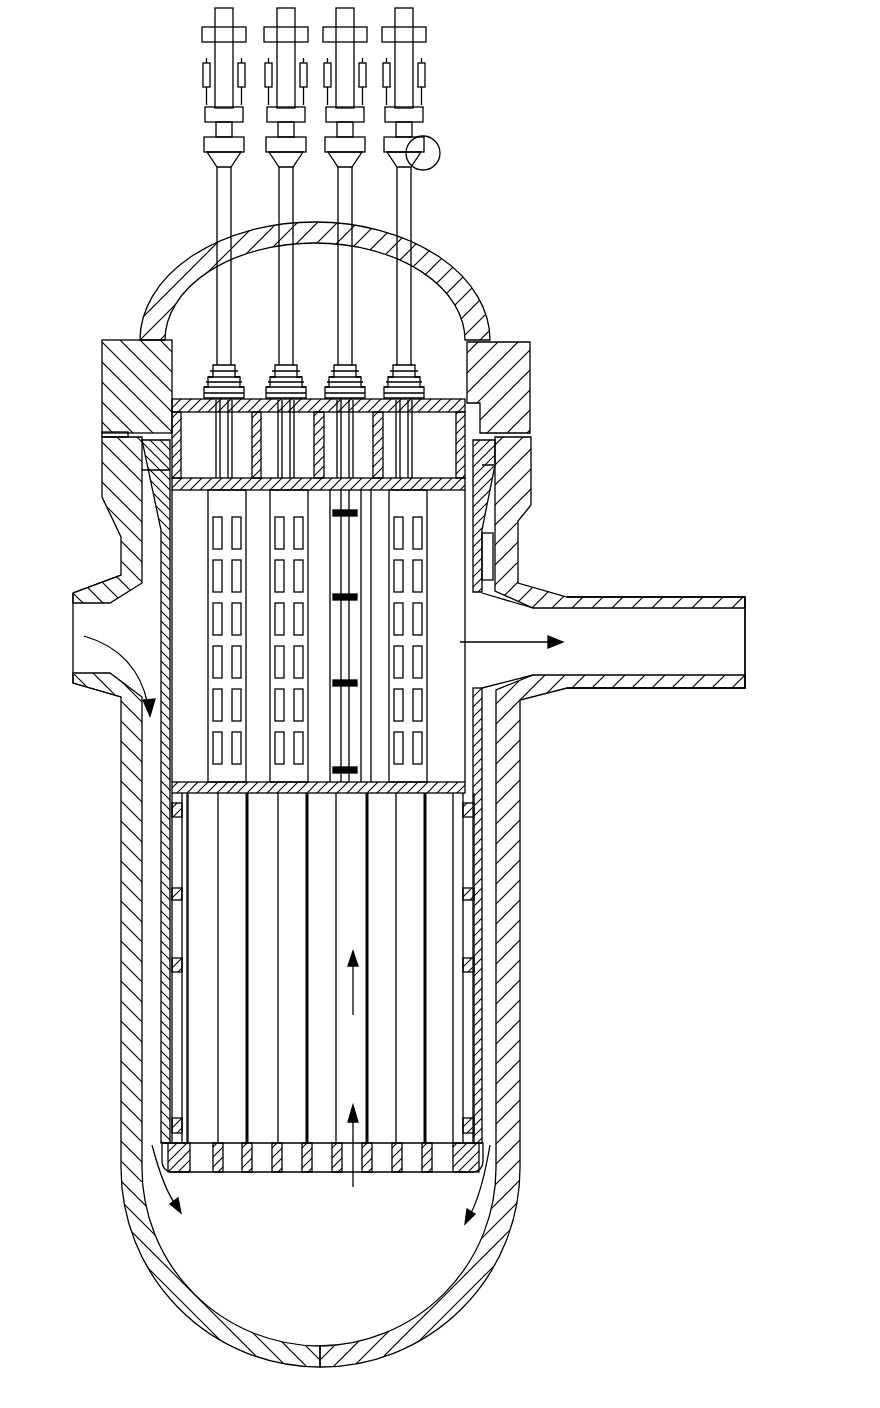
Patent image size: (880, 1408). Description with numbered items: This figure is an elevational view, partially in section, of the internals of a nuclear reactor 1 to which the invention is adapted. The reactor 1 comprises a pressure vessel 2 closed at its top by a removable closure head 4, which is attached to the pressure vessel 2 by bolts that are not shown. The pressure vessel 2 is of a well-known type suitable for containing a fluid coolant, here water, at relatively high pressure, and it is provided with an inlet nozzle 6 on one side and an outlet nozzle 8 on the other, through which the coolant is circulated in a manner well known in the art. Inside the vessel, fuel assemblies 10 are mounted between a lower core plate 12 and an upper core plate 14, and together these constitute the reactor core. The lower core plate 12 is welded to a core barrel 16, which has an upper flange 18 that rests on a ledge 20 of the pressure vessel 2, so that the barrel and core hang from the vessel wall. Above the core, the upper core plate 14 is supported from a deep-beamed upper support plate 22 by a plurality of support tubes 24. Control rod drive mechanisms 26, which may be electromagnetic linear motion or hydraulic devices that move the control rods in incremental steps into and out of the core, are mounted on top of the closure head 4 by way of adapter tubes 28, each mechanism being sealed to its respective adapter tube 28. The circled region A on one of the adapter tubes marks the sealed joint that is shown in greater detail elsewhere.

The reactor 1 is at (538, 352).
The pressure vessel 2 is at (524, 1055).
The removable closure head 4 is at (462, 292).
The inlet nozzle 6 is at (75, 628).
The outlet nozzle 8 is at (730, 639).
The fuel assemblies 10 is at (290, 913).
The lower core plate 12 is at (282, 1172).
The upper core plate 14 is at (453, 782).
The core barrel 16 is at (485, 850).
The upper flange 18 is at (523, 470).
The ledge 20 is at (528, 510).
The upper support plate 22 is at (526, 406).
The support tubes 24 is at (210, 576).
The control rod drive mechanisms 26 is at (216, 26).
The adapter tubes 28 is at (280, 208).
The detail region A is at (432, 141).